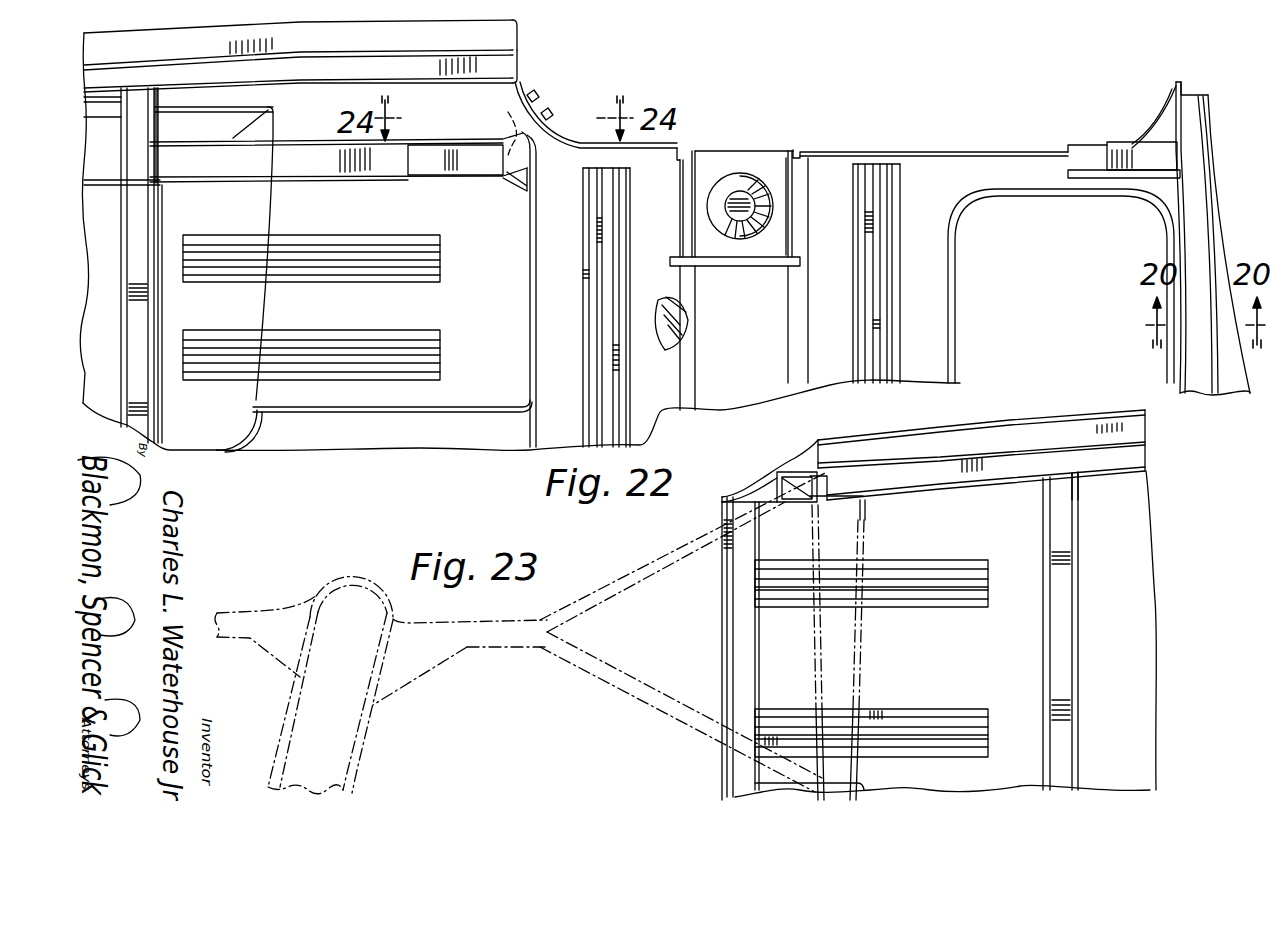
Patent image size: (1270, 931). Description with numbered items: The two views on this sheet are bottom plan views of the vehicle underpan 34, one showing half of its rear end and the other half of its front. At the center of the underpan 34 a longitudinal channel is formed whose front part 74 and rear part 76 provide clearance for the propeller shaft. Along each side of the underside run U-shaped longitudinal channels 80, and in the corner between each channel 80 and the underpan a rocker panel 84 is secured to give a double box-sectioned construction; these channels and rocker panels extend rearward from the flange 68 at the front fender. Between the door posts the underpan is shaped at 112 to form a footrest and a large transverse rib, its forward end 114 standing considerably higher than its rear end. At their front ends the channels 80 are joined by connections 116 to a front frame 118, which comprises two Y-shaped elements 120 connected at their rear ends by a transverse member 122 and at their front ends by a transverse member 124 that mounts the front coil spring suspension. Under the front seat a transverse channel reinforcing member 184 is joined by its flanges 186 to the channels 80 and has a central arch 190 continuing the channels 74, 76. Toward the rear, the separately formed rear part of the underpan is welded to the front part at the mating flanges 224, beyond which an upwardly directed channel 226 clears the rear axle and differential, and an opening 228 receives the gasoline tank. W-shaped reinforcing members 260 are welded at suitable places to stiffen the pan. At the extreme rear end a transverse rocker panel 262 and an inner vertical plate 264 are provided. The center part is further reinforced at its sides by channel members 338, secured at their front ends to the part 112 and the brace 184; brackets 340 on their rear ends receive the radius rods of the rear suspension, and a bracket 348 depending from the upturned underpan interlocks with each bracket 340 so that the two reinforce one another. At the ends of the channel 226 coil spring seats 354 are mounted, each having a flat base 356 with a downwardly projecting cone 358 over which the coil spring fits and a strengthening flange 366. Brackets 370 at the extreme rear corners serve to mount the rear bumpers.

In FIG. 23, the underpan 34 is at (1133, 627).
In FIG. 23, the flange 68 is at (722, 665).
In FIG. 23, the front part of channel 74 is at (745, 790).
In FIG. 22, the rear part of channel 76 is at (423, 432).
In FIG. 22, the U-shaped longitudinal channel 80 is at (497, 67).
In FIG. 23, the U-shaped longitudinal channel 80 is at (1045, 458).
In FIG. 22, the rocker panel 84 is at (497, 35).
In FIG. 23, the rocker panel 84 is at (985, 408).
In FIG. 22, the shaped part 112 is at (252, 206).
In FIG. 22, the forward end of shaped part 114 is at (165, 203).
In FIG. 23, the connection 116 is at (789, 480).
In FIG. 23, the front frame 118 is at (639, 692).
In FIG. 23, the Y-shaped element 120 is at (620, 593).
In FIG. 23, the transverse member 122 is at (853, 625).
In FIG. 23, the front transverse member 124 is at (298, 710).
In FIG. 22, the transverse channel reinforcing member 184 is at (137, 356).
In FIG. 23, the transverse channel reinforcing member 184 is at (1062, 552).
In FIG. 23, the flange 186 is at (1076, 478).
In FIG. 22, the arch 190 is at (137, 423).
In FIG. 22, the mating flange 224 is at (532, 280).
In FIG. 22, the upwardly directed channel 226 is at (730, 390).
In FIG. 22, the opening 228 is at (955, 300).
In FIG. 22, the W-shaped reinforcing member 260 is at (613, 215).
In FIG. 23, the W-shaped reinforcing member 260 is at (977, 605).
In FIG. 22, the transverse rocker panel 262 is at (1207, 197).
In FIG. 22, the inner vertical plate 264 is at (1215, 370).
In FIG. 22, the channel member 338 is at (314, 128).
In FIG. 22, the bracket 340 is at (437, 165).
In FIG. 22, the bracket 348 is at (508, 126).
In FIG. 22, the coil spring seat 354 is at (718, 162).
In FIG. 22, the flat base part 356 is at (776, 170).
In FIG. 22, the cone 358 is at (751, 187).
In FIG. 22, the flange 366 is at (725, 265).
In FIG. 22, the bracket 370 is at (1128, 160).